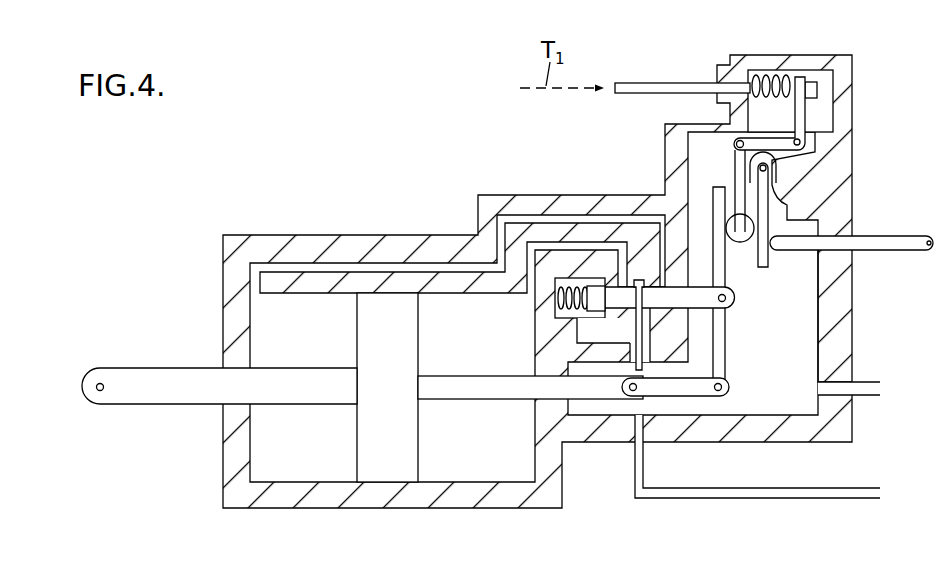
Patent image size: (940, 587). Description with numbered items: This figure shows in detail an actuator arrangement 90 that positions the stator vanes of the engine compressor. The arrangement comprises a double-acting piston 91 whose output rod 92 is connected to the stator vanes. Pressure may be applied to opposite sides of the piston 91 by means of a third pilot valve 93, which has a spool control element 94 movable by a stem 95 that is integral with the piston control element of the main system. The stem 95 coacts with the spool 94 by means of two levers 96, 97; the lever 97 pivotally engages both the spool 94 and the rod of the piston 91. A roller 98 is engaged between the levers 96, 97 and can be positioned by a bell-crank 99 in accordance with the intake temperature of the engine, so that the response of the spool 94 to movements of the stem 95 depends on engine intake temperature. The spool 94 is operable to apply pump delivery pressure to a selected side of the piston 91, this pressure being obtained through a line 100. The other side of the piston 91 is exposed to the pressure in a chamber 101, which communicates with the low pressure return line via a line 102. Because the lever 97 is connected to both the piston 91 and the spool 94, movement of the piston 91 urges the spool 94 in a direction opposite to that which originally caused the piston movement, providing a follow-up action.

The actuator arrangement 90 is at (343, 515).
The double-acting piston 91 is at (378, 312).
The output rod 92 is at (158, 394).
The third pilot valve 93 is at (626, 188).
The spool control element 94 is at (700, 303).
The stem 95 is at (905, 222).
The lever 96 is at (785, 198).
The lever 97 is at (718, 370).
The roller 98 is at (742, 242).
The bell-crank 99 is at (806, 107).
The line 100 is at (822, 498).
The chamber 101 is at (803, 333).
The line 102 is at (873, 390).